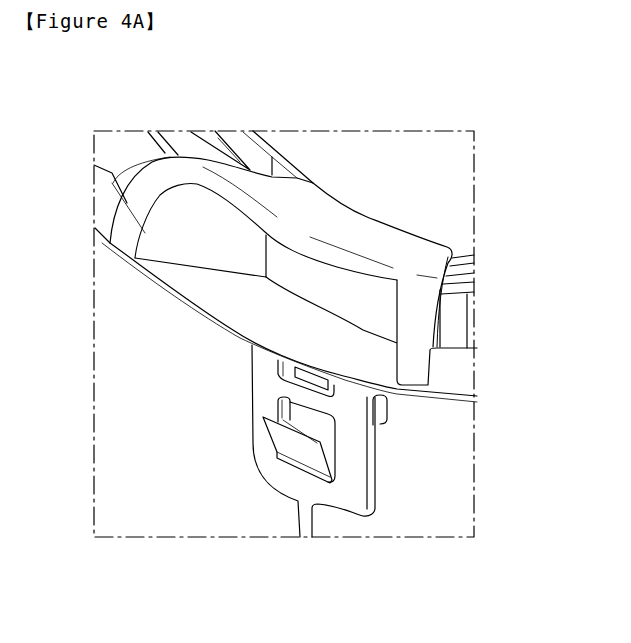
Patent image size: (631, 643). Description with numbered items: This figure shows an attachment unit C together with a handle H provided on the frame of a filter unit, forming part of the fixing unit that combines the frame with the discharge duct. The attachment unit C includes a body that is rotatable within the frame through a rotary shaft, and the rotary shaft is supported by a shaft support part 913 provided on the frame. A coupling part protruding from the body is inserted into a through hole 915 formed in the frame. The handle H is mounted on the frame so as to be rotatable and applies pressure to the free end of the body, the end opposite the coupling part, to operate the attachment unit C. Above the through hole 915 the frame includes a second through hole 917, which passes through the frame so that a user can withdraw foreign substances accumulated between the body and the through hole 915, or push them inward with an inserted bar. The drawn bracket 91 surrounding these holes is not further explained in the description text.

The hood H is at (331, 212).
The bracket 91 is at (360, 452).
The tab 913 is at (383, 411).
The clip 915 is at (277, 405).
The slot 917 is at (252, 359).
The wedge C is at (303, 450).